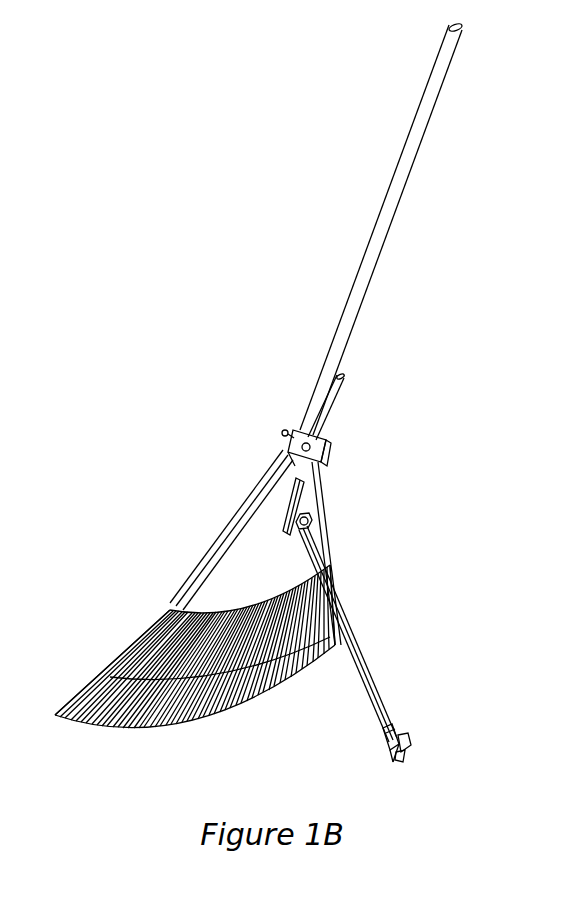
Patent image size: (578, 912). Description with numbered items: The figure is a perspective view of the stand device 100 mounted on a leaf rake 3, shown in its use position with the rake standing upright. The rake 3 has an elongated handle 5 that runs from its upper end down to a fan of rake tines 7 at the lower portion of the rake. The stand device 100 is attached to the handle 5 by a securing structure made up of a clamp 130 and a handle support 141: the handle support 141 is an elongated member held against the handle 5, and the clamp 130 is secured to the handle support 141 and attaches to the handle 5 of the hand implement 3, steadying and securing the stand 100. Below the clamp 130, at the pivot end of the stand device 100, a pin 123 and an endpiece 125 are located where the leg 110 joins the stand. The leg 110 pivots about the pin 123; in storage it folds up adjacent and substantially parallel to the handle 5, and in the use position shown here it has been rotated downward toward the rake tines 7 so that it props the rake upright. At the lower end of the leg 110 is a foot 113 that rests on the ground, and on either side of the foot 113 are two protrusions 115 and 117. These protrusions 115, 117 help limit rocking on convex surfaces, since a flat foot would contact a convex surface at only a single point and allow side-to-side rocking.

The rake 3 is at (436, 266).
The handle 5 is at (377, 230).
The rake tines 7 is at (95, 683).
The stand device 100 is at (400, 497).
The handle support 141 is at (332, 415).
The clamp 130 is at (327, 450).
The pin 123 is at (293, 515).
The endpiece 125 is at (306, 523).
The leg 110 is at (372, 687).
The foot 113 is at (403, 748).
The protrusion 115 is at (393, 762).
The protrusion 117 is at (410, 762).